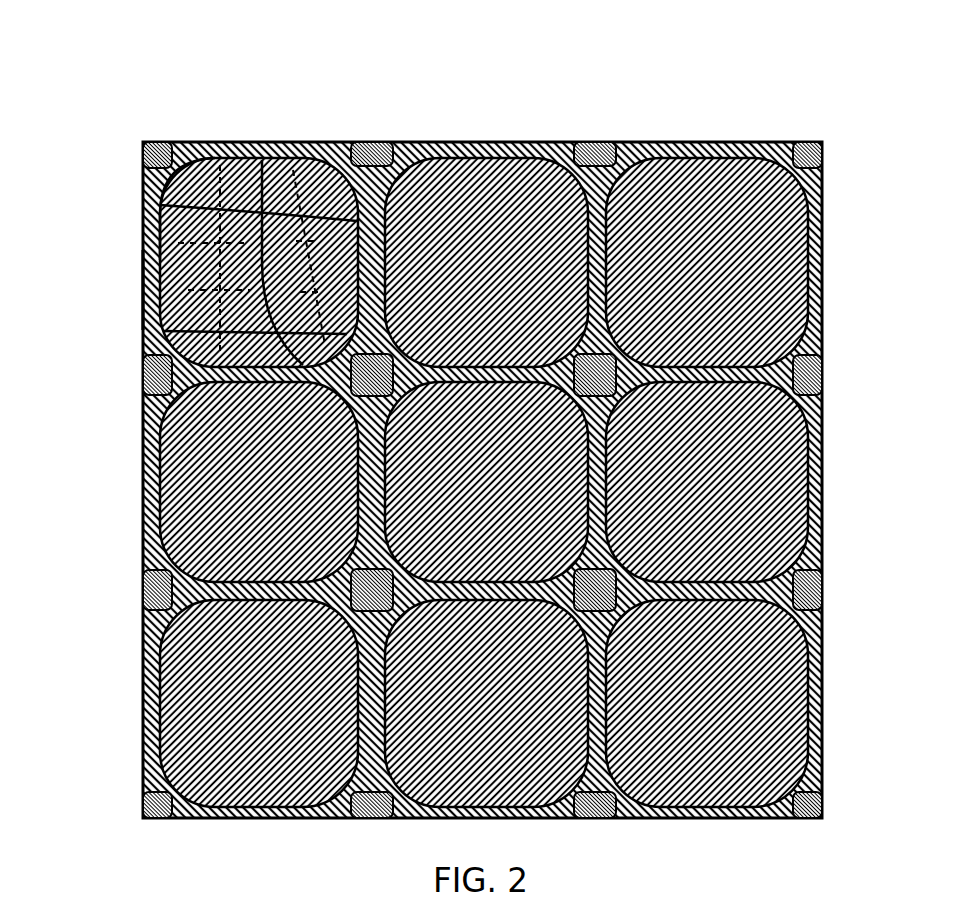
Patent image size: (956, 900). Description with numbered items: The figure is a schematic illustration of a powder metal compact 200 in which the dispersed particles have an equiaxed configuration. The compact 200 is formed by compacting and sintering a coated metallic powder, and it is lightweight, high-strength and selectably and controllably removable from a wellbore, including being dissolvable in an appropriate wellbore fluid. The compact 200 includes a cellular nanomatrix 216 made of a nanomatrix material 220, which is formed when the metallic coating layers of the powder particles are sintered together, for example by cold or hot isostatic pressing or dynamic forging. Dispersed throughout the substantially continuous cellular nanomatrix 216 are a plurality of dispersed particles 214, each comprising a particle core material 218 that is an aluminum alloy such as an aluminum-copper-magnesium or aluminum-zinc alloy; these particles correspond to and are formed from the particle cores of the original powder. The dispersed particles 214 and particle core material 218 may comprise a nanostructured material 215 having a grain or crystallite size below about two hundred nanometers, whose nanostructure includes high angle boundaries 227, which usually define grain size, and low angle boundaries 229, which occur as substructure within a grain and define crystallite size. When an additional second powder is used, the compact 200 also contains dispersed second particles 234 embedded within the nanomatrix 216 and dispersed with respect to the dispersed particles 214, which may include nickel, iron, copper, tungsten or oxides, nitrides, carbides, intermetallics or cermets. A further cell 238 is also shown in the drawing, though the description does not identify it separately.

The powder metal compact 200 is at (482, 414).
The dispersed particles 214 is at (150, 188).
The nanostructured material 215 is at (287, 167).
The cellular nanomatrix 216 is at (190, 198).
The particle core material 218 is at (147, 283).
The nanomatrix material 220 is at (417, 155).
The high angle boundaries 227 is at (197, 172).
The low angle boundaries 229 is at (183, 243).
The dispersed second particles 234 is at (338, 596).
The cell 238 is at (317, 678).